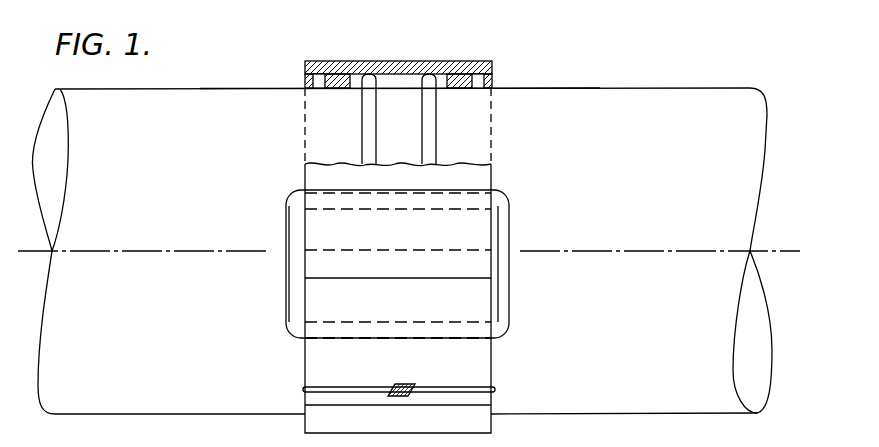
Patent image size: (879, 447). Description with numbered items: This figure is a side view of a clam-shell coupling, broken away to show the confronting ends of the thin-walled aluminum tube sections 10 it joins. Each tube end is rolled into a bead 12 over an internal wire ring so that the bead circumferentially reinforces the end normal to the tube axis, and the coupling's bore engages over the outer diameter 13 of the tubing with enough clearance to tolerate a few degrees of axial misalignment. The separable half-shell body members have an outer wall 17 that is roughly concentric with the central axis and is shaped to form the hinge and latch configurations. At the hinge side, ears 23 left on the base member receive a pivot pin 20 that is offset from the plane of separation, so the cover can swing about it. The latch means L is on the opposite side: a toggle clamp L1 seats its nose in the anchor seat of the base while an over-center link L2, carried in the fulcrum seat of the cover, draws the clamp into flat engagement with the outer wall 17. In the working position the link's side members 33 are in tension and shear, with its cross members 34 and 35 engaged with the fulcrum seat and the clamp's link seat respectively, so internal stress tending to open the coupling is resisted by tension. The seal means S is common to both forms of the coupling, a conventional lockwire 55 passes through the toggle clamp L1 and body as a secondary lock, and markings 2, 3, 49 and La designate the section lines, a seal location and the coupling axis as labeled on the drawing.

The beaded tube section 10 is at (402, 251).
The bead 12 is at (436, 127).
The outer diameter of the tubing 13 is at (689, 87).
The outer wall 17 is at (426, 61).
The pivot pin 20 is at (606, 446).
The ears 23 is at (526, 446).
The side members 33 is at (509, 217).
The cross member 34 is at (470, 193).
The cross member 35 is at (414, 339).
The seal 49 is at (306, 78).
The lockwire 55 is at (330, 388).
The section line 2- 2 is at (324, 37).
The section line 3- 3 is at (237, 272).
The seal means S is at (468, 70).
The latch means L is at (520, 199).
The toggle clamp L1 is at (483, 358).
The over-center link L2 is at (509, 320).
The axis La is at (451, 263).